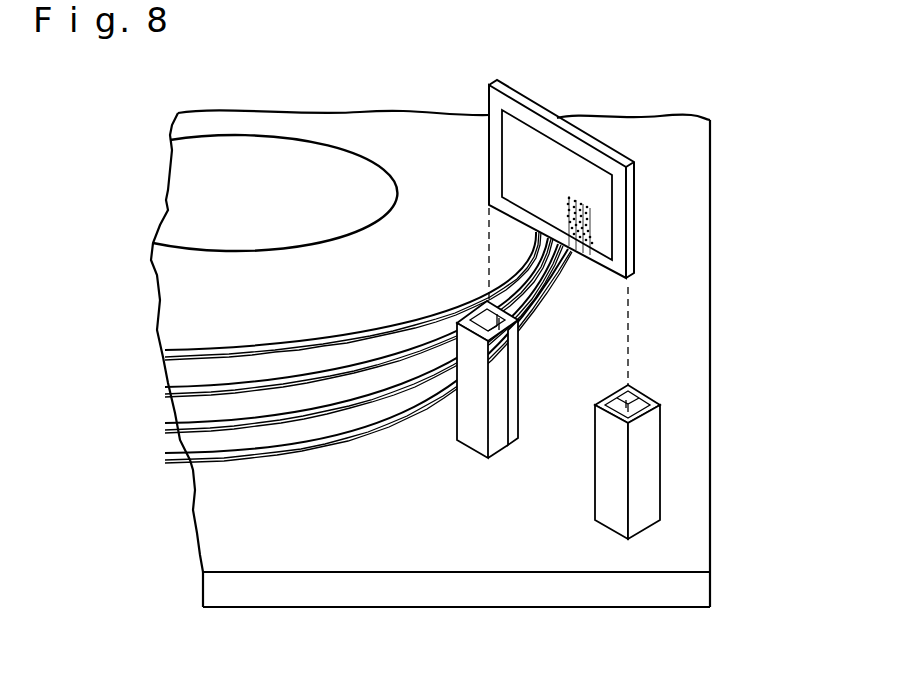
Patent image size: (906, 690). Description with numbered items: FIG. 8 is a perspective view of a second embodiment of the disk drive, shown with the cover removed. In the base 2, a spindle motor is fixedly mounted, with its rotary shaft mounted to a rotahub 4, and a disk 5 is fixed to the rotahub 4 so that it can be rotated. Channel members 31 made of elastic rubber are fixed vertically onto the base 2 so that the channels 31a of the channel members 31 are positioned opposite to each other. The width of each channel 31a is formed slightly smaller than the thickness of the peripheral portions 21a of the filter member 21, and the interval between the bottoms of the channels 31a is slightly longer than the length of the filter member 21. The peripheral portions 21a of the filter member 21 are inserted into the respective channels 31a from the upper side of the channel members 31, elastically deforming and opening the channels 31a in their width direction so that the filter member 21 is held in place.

The base 2 is at (709, 547).
The rotahub 4 is at (176, 205).
The disk 5 is at (187, 371).
The filter member 21 is at (641, 232).
The peripheral portions 21a is at (622, 227).
The channel members 31 is at (523, 360).
The channels 31a is at (510, 378).